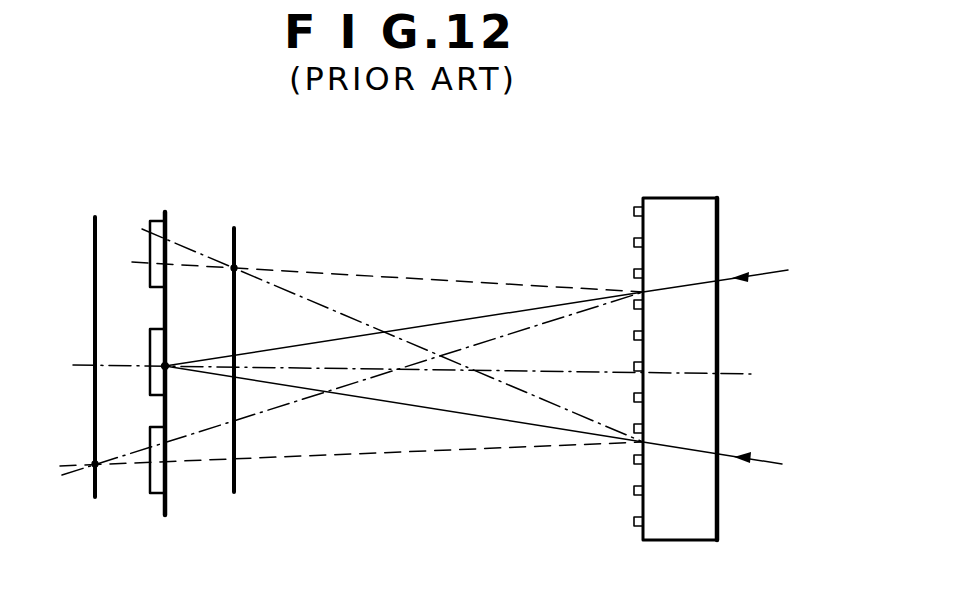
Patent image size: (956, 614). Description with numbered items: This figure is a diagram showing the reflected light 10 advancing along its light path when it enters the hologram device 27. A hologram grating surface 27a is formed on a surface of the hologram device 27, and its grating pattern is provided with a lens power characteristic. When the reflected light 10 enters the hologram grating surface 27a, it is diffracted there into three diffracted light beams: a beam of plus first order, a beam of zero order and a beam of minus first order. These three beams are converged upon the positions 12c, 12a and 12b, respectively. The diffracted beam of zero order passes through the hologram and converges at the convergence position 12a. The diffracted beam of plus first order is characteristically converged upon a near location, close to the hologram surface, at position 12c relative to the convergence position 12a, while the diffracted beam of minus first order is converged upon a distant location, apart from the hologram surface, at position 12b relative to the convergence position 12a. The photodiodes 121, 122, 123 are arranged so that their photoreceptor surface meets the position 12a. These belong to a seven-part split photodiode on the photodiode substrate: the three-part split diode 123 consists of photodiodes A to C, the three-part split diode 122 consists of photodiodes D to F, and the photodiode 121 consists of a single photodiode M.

The reflected light 10 is at (757, 272).
The convergence position of zero-order diffracted light beam 12a is at (161, 365).
The convergence position of minus-first-order diffracted light beam 12b is at (94, 466).
The convergence position of plus-first-order diffracted light beam 12c is at (237, 267).
The photodiode 121 is at (157, 379).
The three-part split diode 122 is at (155, 247).
The three-part split diode 123 is at (153, 483).
The hologram device 27 is at (660, 522).
The hologram grating surface 27a is at (633, 212).